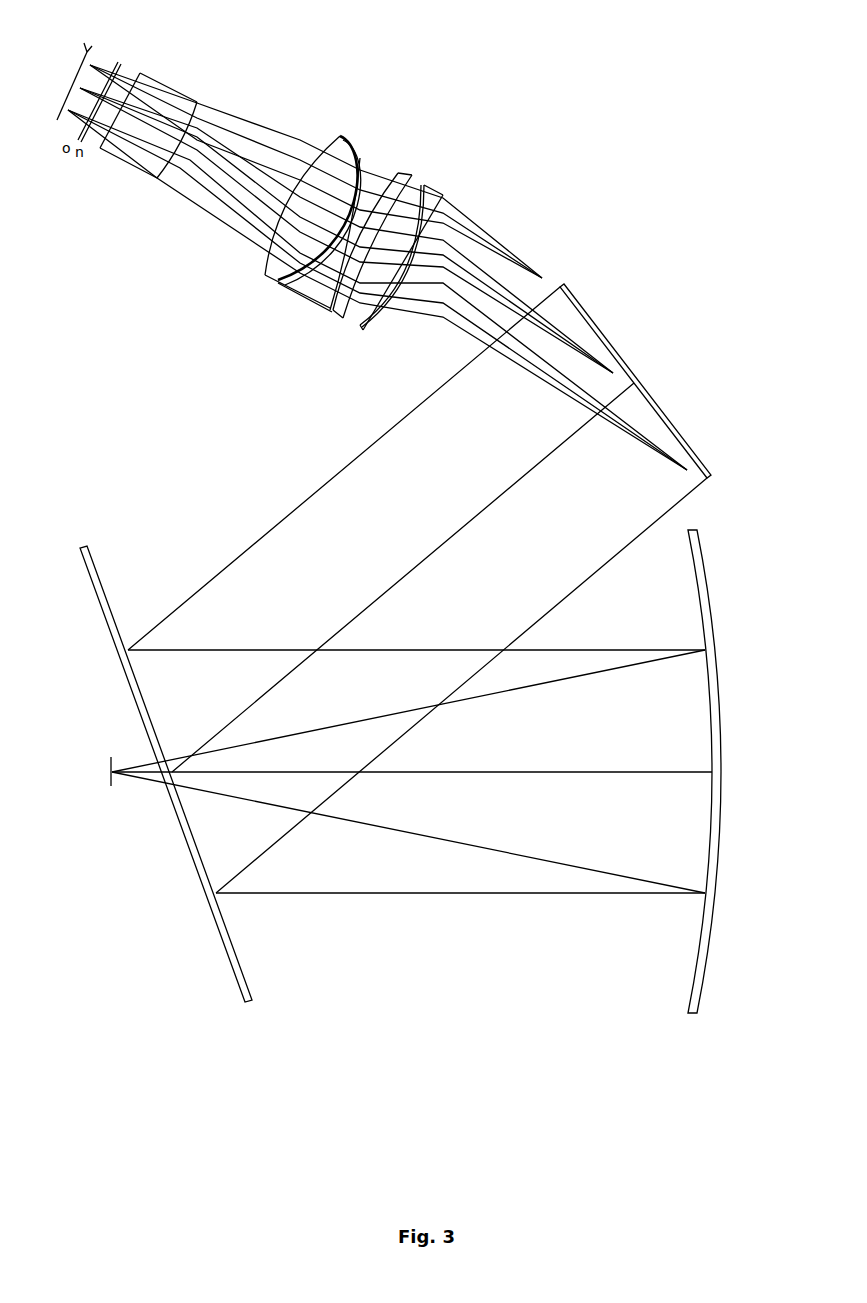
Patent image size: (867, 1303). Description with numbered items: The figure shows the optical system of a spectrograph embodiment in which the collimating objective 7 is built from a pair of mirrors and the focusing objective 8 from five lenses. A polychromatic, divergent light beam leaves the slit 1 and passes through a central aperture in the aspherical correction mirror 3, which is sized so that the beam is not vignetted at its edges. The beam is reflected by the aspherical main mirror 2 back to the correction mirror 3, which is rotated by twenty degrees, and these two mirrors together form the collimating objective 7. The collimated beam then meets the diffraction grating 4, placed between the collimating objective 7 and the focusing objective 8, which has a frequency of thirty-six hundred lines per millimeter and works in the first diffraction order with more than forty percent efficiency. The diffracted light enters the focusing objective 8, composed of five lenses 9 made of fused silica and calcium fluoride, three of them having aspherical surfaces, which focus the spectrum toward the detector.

The slit 1 is at (111, 786).
The main mirror 2 is at (698, 969).
The correction mirror 3 is at (216, 901).
The diffraction grating 4 is at (586, 312).
The collimating objective 7 is at (720, 1045).
The focusing objective 8 is at (462, 207).
The lenses 9 is at (228, 273).